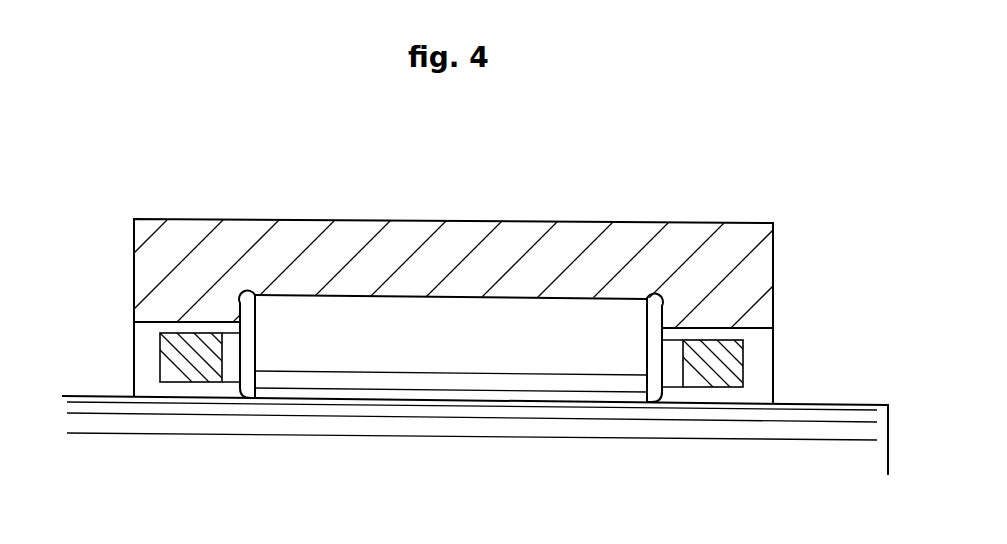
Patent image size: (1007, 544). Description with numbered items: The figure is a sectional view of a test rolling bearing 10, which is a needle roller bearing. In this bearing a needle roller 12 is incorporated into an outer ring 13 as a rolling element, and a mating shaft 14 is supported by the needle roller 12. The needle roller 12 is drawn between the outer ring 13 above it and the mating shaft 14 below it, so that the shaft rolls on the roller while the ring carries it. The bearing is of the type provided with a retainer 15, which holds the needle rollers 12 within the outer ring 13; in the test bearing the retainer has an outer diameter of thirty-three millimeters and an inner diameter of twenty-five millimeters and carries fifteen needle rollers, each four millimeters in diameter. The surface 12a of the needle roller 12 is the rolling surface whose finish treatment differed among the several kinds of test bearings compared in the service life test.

The rolling bearing 10 is at (634, 219).
The needle roller 12 is at (515, 323).
The rolling surface of roller 12a is at (412, 295).
The outer ring 13 is at (299, 235).
The mating shaft 14 is at (828, 416).
The retainer 15 is at (173, 352).